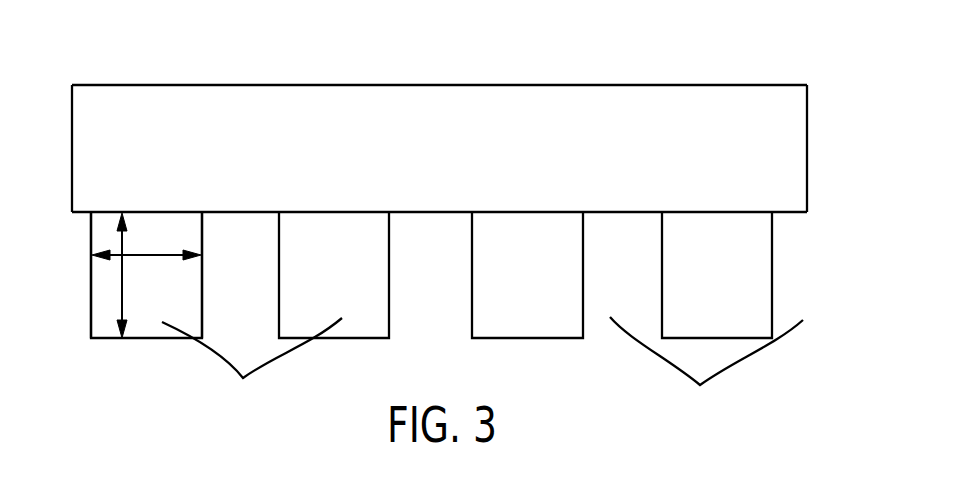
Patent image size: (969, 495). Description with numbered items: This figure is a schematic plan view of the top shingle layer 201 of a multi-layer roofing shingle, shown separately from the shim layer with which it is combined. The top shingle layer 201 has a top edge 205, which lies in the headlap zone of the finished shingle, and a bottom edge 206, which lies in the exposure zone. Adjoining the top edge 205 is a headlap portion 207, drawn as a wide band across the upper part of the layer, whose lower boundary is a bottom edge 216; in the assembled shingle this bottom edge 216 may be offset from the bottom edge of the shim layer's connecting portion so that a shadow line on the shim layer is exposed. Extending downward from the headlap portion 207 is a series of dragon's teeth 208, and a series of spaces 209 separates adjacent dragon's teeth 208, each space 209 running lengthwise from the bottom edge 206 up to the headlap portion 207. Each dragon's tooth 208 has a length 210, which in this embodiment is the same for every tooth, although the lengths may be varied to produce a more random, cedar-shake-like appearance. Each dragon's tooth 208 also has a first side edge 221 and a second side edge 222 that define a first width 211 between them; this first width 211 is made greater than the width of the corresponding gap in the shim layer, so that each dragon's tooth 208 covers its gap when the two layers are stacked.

The top shingle layer 201 is at (519, 50).
The top edge 205 is at (370, 85).
The bottom edge 206 is at (360, 340).
The headlap portion 207 is at (777, 137).
The dragon's teeth 208 is at (252, 366).
The spaces 209 is at (706, 371).
The length 210 is at (137, 275).
The first width 211 is at (146, 243).
The bottom edge of headlap portion 216 is at (405, 212).
The first side edge 221 is at (90, 285).
The second side edge 222 is at (203, 278).